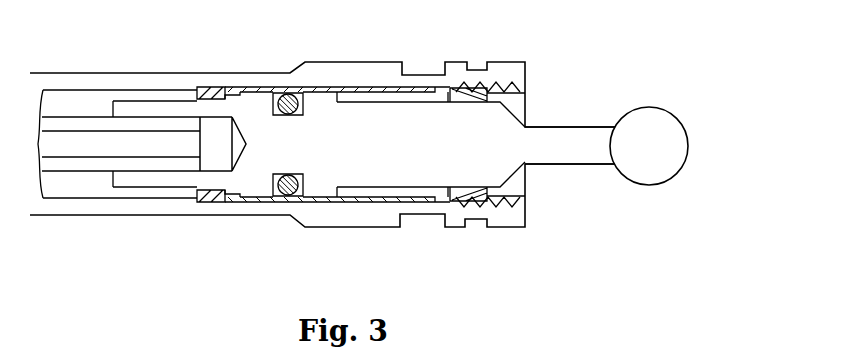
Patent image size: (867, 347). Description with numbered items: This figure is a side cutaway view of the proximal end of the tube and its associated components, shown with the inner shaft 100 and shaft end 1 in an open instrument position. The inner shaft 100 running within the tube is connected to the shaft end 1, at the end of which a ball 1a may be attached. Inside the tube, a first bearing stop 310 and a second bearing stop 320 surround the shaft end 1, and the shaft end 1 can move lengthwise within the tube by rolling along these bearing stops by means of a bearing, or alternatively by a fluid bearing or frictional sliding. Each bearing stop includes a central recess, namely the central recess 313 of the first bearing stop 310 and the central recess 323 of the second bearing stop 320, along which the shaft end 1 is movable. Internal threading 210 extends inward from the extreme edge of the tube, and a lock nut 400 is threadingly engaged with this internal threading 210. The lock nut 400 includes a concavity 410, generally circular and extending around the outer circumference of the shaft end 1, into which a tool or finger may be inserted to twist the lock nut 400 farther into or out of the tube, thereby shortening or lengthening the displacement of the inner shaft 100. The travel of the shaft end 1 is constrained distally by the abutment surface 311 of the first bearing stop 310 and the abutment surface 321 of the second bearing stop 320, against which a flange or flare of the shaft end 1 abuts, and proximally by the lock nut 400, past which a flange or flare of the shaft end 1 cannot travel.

The shaft end 1 is at (575, 128).
The ball 1a is at (684, 137).
The inner shaft 100 is at (82, 145).
The internal threading 210 is at (485, 93).
The first bearing stop 310 is at (210, 93).
The abutment surface 311 is at (240, 93).
The central recess 313 is at (362, 97).
The second bearing stop 320 is at (207, 194).
The abutment surface 321 is at (231, 195).
The central recess 323 is at (357, 192).
The lock nut 400 is at (465, 205).
The concavity 410 is at (513, 190).